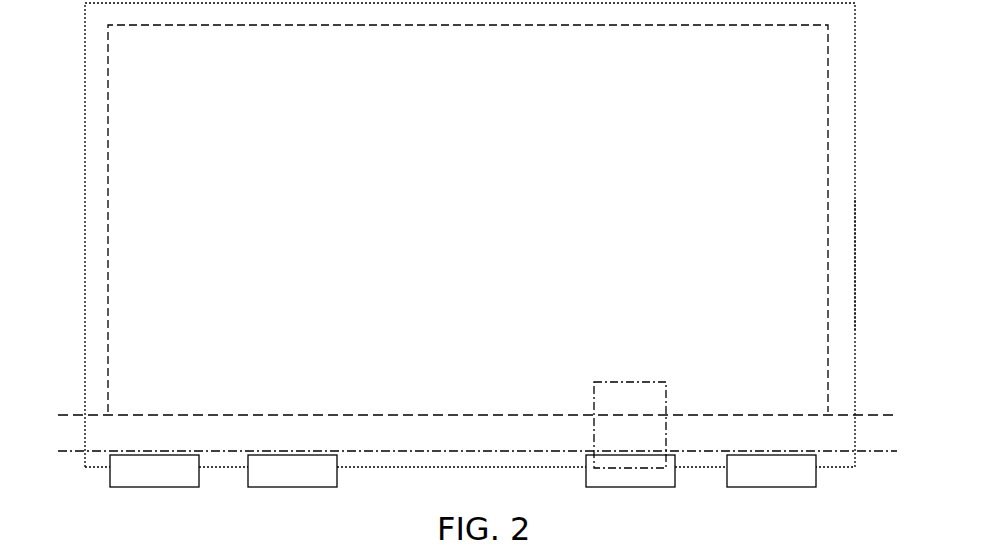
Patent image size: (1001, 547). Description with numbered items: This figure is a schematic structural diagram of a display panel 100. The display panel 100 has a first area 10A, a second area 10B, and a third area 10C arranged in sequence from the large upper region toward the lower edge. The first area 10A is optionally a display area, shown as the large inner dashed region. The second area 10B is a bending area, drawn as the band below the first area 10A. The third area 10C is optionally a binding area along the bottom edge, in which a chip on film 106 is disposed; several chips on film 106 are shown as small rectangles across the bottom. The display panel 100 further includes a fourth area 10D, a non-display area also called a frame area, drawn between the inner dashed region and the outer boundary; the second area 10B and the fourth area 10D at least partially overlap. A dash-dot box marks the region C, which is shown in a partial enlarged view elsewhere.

The display panel 100 is at (58, 28).
The first area 10A is at (826, 178).
The second area 10B is at (848, 430).
The third area 10C is at (858, 475).
The fourth area 10D is at (851, 262).
The chip on film 106 is at (115, 480).
The region C is at (667, 442).